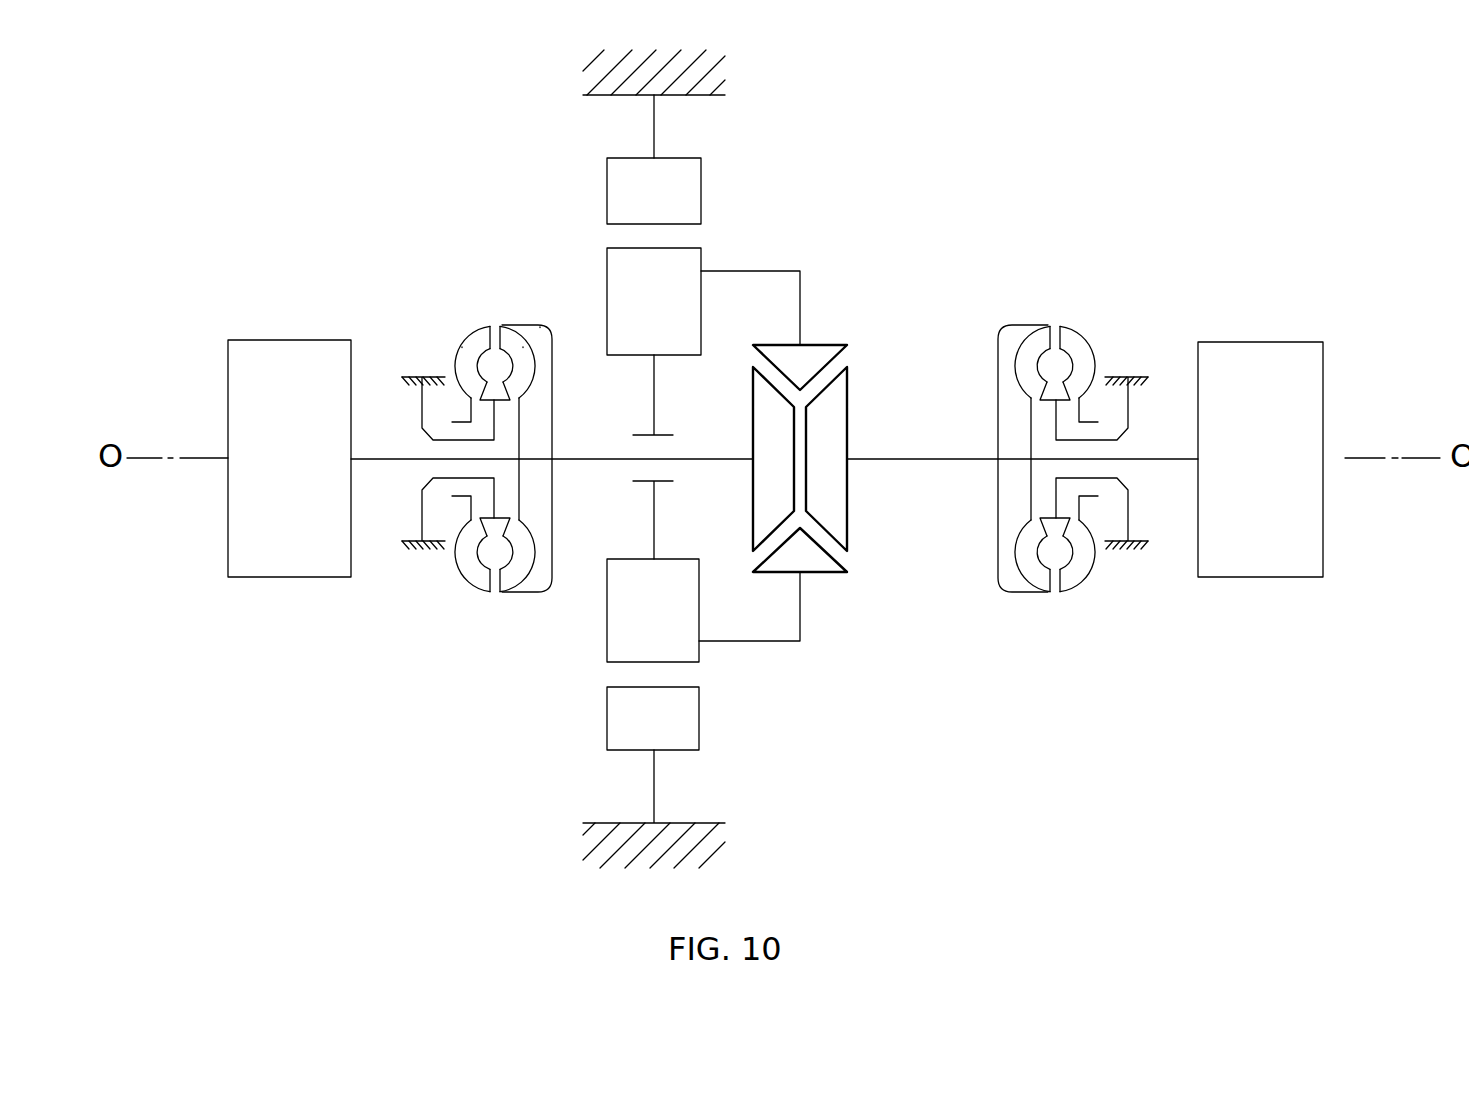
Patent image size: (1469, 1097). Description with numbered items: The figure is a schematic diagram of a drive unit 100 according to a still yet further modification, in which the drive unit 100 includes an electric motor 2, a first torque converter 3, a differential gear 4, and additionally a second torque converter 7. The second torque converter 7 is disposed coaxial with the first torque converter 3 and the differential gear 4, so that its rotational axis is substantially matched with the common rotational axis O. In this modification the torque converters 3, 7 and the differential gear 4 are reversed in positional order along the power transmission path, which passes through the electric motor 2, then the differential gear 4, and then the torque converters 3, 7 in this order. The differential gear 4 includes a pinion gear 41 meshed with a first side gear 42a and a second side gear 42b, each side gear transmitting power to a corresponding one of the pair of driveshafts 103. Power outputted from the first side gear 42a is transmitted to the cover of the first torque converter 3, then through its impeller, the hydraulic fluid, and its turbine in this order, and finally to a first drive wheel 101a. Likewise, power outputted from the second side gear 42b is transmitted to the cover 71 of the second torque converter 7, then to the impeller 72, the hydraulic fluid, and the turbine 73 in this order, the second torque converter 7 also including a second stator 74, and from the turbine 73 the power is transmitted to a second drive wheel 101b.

The drive unit 100 is at (1042, 160).
The electric motor 2 is at (588, 175).
The first torque converter 3 is at (497, 392).
The differential gear 4 is at (844, 474).
The pinion gear 41 is at (808, 348).
The first side gear 42a is at (757, 490).
The second side gear 42b is at (838, 414).
The second torque converter 7 is at (1086, 392).
The cover 71 is at (1000, 320).
The impeller 72 is at (1088, 348).
The turbine 73 is at (1030, 348).
The second stator 74 is at (1080, 397).
The first drive wheel 101a is at (272, 577).
The second drive wheel 101b is at (1258, 577).
The driveshaft 103 is at (592, 459).